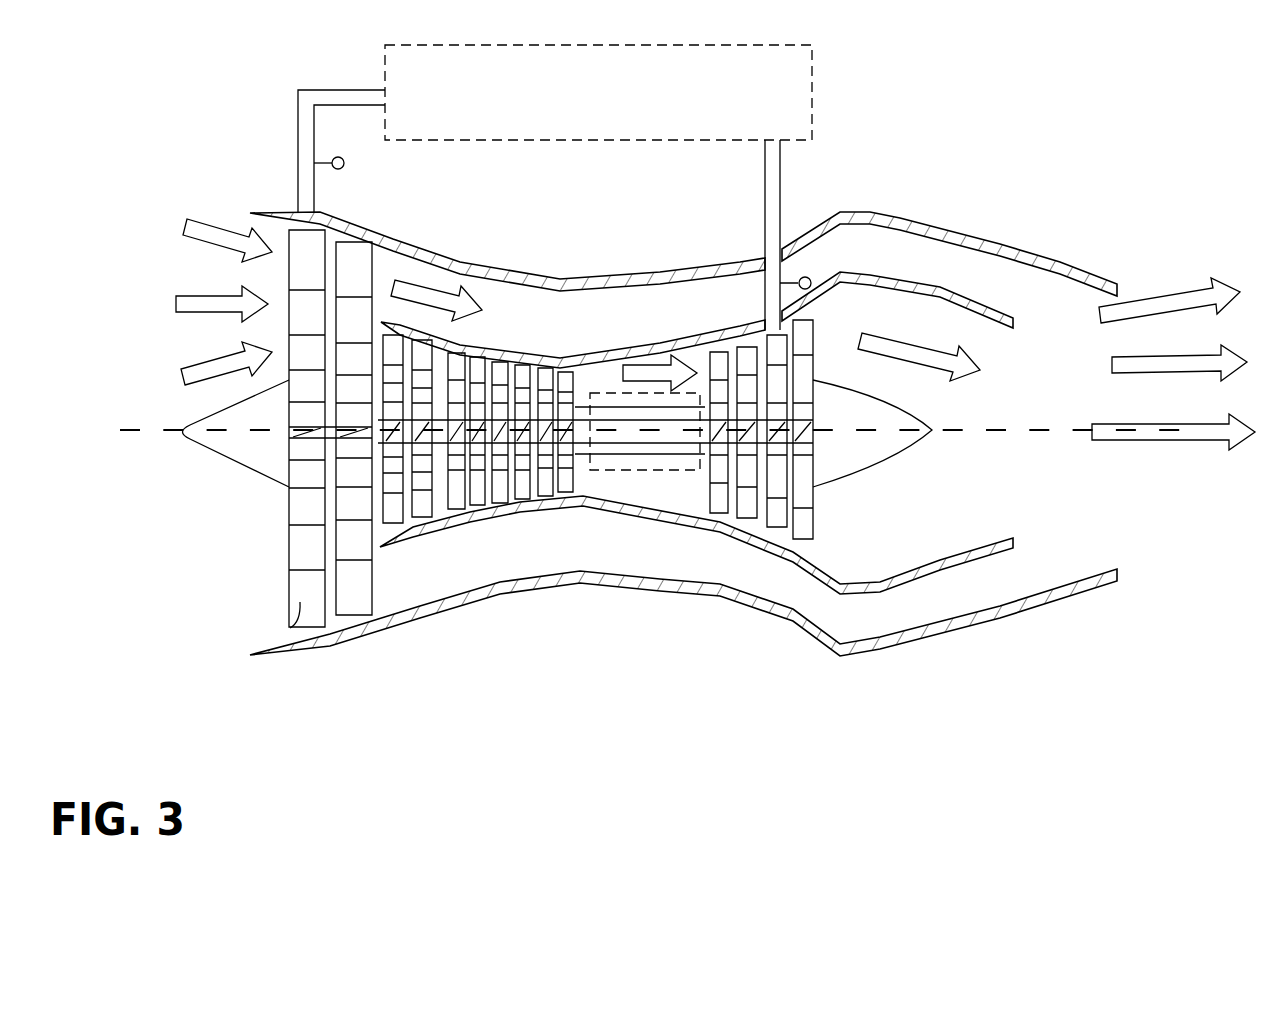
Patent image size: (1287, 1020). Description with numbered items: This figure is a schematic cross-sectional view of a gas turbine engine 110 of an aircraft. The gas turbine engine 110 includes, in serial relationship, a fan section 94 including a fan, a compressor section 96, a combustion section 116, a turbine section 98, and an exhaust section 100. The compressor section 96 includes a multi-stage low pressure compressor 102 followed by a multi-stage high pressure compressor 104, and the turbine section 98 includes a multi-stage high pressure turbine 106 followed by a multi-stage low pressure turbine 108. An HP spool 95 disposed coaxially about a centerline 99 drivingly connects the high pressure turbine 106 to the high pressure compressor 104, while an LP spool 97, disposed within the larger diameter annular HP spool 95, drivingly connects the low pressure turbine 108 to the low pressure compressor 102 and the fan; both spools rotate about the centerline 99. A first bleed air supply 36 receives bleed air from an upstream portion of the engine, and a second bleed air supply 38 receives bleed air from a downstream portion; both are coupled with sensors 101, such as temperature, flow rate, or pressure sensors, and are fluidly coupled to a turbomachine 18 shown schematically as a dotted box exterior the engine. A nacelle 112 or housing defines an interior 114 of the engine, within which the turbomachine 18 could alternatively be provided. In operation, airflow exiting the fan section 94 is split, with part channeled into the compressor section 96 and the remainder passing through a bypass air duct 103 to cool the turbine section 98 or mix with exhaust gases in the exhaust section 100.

The turbomachine 18 is at (812, 93).
The first bleed air supply 36 is at (809, 277).
The second bleed air supply 38 is at (298, 180).
The fan section 94 is at (262, 638).
The HP spool 95 is at (658, 403).
The compressor section 96 is at (470, 520).
The LP spool 97 is at (612, 403).
The turbine section 98 is at (749, 528).
The centerline 99 is at (654, 410).
The exhaust section 100 is at (981, 483).
The sensors 101 is at (345, 166).
The low pressure compressor 102 is at (409, 516).
The bypass air duct 103 is at (385, 322).
The high pressure compressor 104 is at (520, 498).
The high pressure turbine 106 is at (718, 514).
The low pressure turbine 108 is at (795, 542).
The gas turbine engine 110 is at (266, 137).
The nacelle 112 is at (973, 242).
The interior 114 is at (997, 452).
The combustion section 116 is at (615, 475).